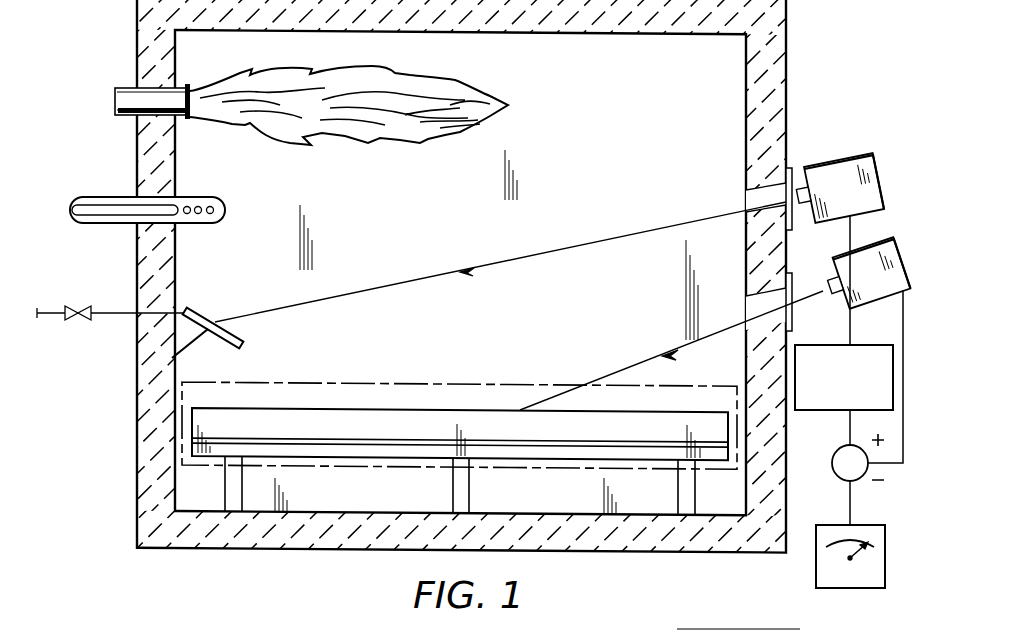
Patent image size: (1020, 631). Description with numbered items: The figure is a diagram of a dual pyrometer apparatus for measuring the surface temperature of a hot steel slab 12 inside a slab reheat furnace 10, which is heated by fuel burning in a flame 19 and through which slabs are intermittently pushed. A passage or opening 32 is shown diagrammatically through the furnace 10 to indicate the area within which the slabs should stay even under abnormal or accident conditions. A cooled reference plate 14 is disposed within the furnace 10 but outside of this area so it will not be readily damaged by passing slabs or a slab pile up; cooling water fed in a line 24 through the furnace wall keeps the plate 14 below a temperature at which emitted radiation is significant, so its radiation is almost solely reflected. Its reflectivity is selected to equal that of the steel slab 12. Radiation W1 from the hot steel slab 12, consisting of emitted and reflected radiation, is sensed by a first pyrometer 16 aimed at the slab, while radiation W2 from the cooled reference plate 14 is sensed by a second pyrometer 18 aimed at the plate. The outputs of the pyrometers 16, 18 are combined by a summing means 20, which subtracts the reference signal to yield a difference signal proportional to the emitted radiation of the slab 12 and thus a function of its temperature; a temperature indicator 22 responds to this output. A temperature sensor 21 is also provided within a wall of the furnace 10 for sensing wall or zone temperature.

The furnace 10 is at (789, 78).
The steel slab 12 is at (487, 416).
The cooled reference plate 14 is at (199, 311).
The first pyrometer 16 is at (841, 262).
The second pyrometer 18 is at (850, 162).
The flame 19 is at (478, 96).
The summing means 20 is at (833, 460).
The temperature sensor 21 is at (220, 206).
The temperature indicator 22 is at (815, 579).
The line 24 is at (90, 305).
The passage or opening 32 is at (368, 383).
The radiation from the steel slab W1 is at (653, 358).
The radiation from the cooled reference plate W2 is at (628, 234).